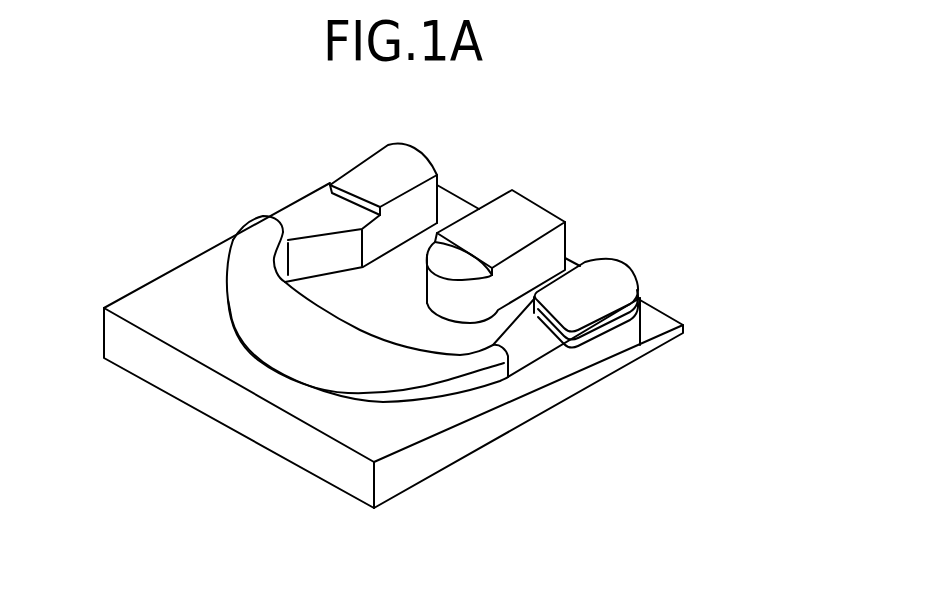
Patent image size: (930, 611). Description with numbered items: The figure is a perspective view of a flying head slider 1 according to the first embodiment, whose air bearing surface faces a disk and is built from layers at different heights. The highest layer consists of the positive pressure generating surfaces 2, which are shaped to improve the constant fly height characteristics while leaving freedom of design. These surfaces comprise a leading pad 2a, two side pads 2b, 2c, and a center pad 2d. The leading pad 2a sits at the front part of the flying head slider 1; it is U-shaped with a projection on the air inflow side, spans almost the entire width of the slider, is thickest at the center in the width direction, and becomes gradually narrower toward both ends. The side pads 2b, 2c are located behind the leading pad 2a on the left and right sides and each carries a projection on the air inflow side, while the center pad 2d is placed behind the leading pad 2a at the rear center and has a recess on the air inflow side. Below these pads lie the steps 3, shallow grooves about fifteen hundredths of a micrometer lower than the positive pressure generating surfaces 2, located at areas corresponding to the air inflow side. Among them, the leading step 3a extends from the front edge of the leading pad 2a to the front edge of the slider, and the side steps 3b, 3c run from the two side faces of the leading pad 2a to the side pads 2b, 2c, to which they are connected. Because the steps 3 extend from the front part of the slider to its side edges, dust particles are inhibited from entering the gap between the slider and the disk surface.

The flying head slider 1 is at (539, 422).
The positive pressure generating surfaces 2 is at (367, 372).
The leading pad 2a is at (473, 363).
The side pad 2b is at (420, 158).
The side pad 2c is at (620, 272).
The center pad 2d is at (540, 215).
The steps 3 is at (177, 298).
The leading step 3a is at (292, 402).
The side step 3b is at (303, 210).
The side step 3c is at (543, 343).